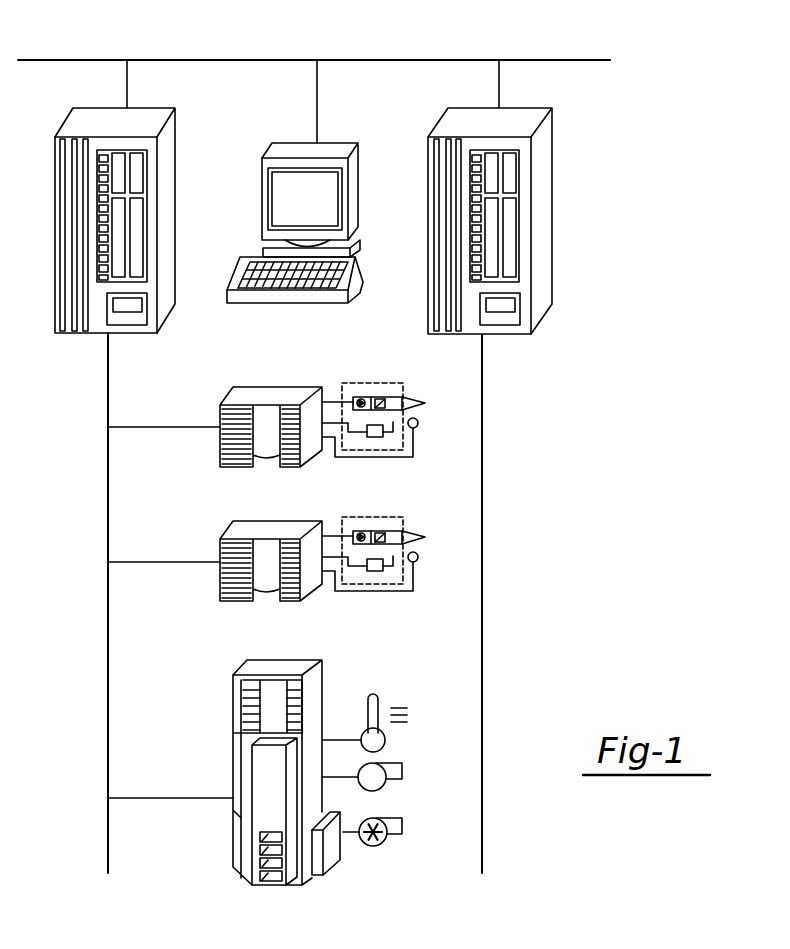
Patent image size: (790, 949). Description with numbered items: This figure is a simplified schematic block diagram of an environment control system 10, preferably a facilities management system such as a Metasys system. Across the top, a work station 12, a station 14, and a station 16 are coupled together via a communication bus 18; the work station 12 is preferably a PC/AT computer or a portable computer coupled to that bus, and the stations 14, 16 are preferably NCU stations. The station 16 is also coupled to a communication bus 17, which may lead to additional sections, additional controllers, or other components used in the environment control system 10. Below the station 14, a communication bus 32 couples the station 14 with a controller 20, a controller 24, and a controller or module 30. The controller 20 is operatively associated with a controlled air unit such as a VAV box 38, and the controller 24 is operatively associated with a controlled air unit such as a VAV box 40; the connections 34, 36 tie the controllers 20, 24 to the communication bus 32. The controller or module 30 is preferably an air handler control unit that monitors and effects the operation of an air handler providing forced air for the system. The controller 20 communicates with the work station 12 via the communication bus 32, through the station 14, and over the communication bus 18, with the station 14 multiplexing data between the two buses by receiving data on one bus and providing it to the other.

The environment control system 10 is at (154, 24).
The work station 12 is at (335, 143).
The station 14 is at (172, 147).
The station 16 is at (545, 220).
The communication bus 17 is at (482, 508).
The communication bus 18 is at (380, 60).
The controller 20 is at (255, 392).
The controller 24 is at (250, 528).
The controller or module 30 is at (318, 693).
The communication bus 32 is at (107, 515).
The connection line 34 is at (217, 427).
The connection line 36 is at (218, 562).
The VAV box 38 is at (370, 383).
The VAV box 40 is at (377, 518).